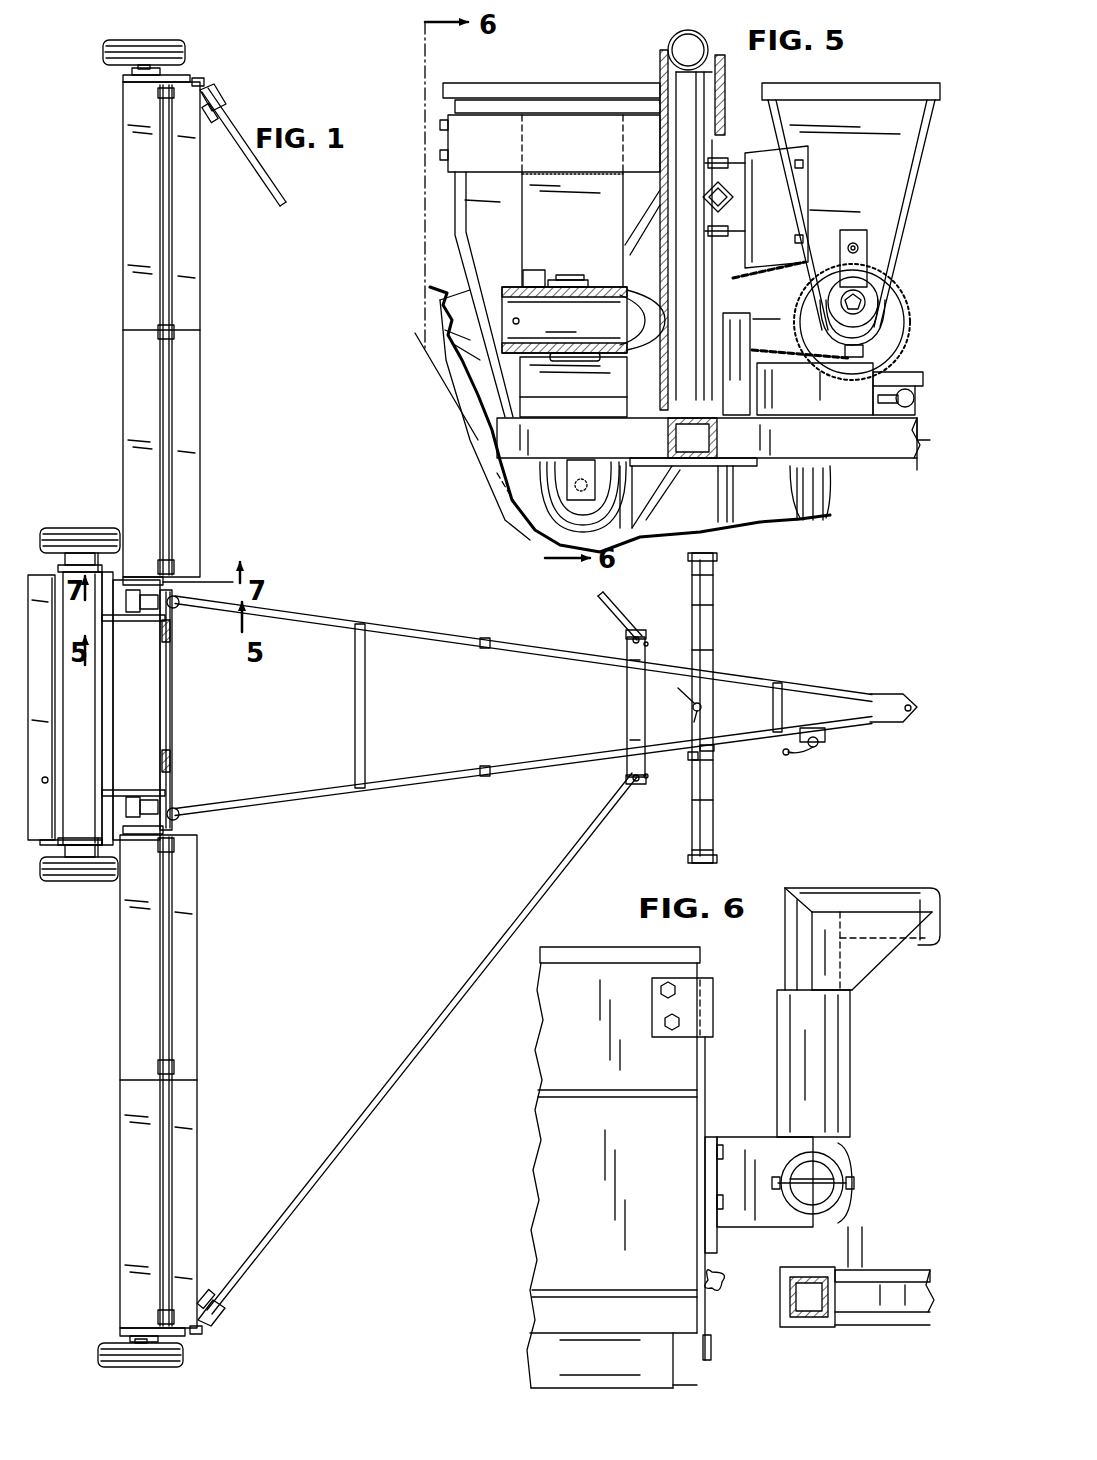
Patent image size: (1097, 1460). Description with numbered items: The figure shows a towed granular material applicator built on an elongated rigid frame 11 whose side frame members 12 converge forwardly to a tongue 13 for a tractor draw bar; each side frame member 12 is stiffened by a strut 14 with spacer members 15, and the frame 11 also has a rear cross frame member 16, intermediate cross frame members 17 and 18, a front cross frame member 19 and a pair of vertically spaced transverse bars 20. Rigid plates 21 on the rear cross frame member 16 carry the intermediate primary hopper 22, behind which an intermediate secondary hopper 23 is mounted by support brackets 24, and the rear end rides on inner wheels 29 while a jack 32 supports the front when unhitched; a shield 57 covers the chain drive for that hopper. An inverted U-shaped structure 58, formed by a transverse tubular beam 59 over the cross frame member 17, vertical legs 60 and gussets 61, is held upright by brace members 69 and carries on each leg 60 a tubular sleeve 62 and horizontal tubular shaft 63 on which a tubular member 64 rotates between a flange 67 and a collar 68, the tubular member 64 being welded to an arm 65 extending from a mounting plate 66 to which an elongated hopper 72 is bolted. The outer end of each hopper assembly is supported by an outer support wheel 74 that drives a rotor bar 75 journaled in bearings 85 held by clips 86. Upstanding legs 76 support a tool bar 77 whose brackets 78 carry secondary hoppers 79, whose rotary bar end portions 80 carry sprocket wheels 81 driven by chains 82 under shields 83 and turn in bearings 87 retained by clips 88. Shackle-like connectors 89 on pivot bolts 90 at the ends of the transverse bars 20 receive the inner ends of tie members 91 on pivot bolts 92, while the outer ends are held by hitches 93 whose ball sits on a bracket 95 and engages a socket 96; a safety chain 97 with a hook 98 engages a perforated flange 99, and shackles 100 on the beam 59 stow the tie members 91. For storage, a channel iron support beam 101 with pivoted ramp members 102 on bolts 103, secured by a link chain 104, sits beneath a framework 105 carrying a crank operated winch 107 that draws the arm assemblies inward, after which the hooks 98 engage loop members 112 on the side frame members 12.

In FIG. 1, the frame 11 is at (433, 625).
In FIG. 1, the side frame members 12 is at (385, 620).
In FIG. 5, the side frame members 12 is at (917, 462).
In FIG. 6, the side frame members 12 is at (806, 1330).
In FIG. 1, the tongue 13 is at (905, 698).
In FIG. 1, the tension members or struts 14 is at (100, 1355).
In FIG. 1, the spacer members 15 is at (486, 650).
In FIG. 1, the rear cross frame member 16 is at (105, 742).
In FIG. 1, the intermediate cross frame member 17 is at (173, 730).
In FIG. 5, the intermediate cross frame member 17 is at (668, 438).
In FIG. 6, the intermediate cross frame member 17 is at (906, 1270).
In FIG. 1, the intermediate cross frame member 18 is at (355, 737).
In FIG. 1, the front cross frame member 19 is at (783, 706).
In FIG. 1, the transverse bars 20 is at (627, 708).
In FIG. 1, the rigid plates 21 is at (106, 550).
In FIG. 1, the intermediate primary hopper 22 is at (75, 721).
In FIG. 1, the intermediate secondary hopper 23 is at (48, 780).
In FIG. 1, the support brackets 24 is at (50, 590).
In FIG. 1, the inner or rear wheels 29 is at (48, 530).
In FIG. 1, the jack 32 is at (818, 748).
In FIG. 1, the shield 57 is at (58, 870).
In FIG. 1, the inverted U-shaped structure 58 is at (173, 709).
In FIG. 5, the inverted U-shaped structure 58 is at (666, 38).
In FIG. 6, the inverted U-shaped structure 58 is at (890, 886).
In FIG. 1, the transverse horizontal tubular beam 59 is at (173, 688).
In FIG. 5, the transverse horizontal tubular beam 59 is at (709, 40).
In FIG. 6, the transverse horizontal tubular beam 59 is at (851, 886).
In FIG. 1, the vertical legs 60 is at (177, 607).
In FIG. 5, the vertical legs 60 is at (706, 112).
In FIG. 6, the vertical legs 60 is at (787, 957).
In FIG. 5, the gussets 61 is at (660, 60).
In FIG. 6, the gussets 61 is at (876, 962).
In FIG. 5, the tubular sleeve 62 is at (658, 228).
In FIG. 6, the tubular sleeve 62 is at (838, 1057).
In FIG. 5, the tubular shafts 63 is at (564, 320).
In FIG. 6, the tubular shafts 63 is at (838, 1170).
In FIG. 1, the tubular members 64 is at (140, 614).
In FIG. 5, the tubular members 64 is at (545, 284).
In FIG. 1, the arms 65 is at (150, 594).
In FIG. 5, the arms 65 is at (577, 282).
In FIG. 6, the arms 65 is at (738, 1146).
In FIG. 1, the mounting plates 66 is at (180, 579).
In FIG. 5, the mounting plates 66 is at (525, 285).
In FIG. 6, the mounting plates 66 is at (708, 1192).
In FIG. 5, the flanges 67 is at (622, 356).
In FIG. 5, the collars 68 is at (525, 363).
In FIG. 6, the collars 68 is at (846, 1205).
In FIG. 1, the brace members 69 is at (150, 632).
In FIG. 1, the elongated hoppers 72 is at (136, 386).
In FIG. 5, the elongated hoppers 72 is at (449, 205).
In FIG. 6, the elongated hoppers 72 is at (567, 1055).
In FIG. 1, the outer support wheels 74 is at (105, 54).
In FIG. 5, the outer support wheels 74 is at (449, 305).
In FIG. 5, the rotor bars 75 is at (520, 520).
In FIG. 6, the rotor bars 75 is at (712, 1350).
In FIG. 5, the upstanding legs 76 is at (730, 250).
In FIG. 5, the tool bars 77 is at (735, 198).
In FIG. 1, the brackets 78 is at (163, 92).
In FIG. 5, the brackets 78 is at (755, 186).
In FIG. 1, the secondary hoppers 79 is at (184, 402).
In FIG. 5, the secondary hoppers 79 is at (881, 86).
In FIG. 5, the end portions of rotary bars 80 is at (890, 340).
In FIG. 5, the sprocket wheels 81 is at (903, 318).
In FIG. 1, the endless link chains 82 is at (201, 82).
In FIG. 5, the endless link chains 82 is at (893, 302).
In FIG. 1, the shields 83 is at (125, 81).
In FIG. 5, the shields 83 is at (790, 310).
In FIG. 5, the bearings 85 is at (568, 503).
In FIG. 5, the brackets or clips 86 is at (580, 460).
In FIG. 6, the brackets or clips 86 is at (718, 1298).
In FIG. 5, the bearings 87 is at (882, 284).
In FIG. 5, the retainer clips 88 is at (864, 232).
In FIG. 1, the shackle-like connectors 89 is at (638, 636).
In FIG. 1, the pivot bolts 90 is at (647, 643).
In FIG. 1, the tie members 91 is at (281, 208).
In FIG. 1, the pivot bolts 92 is at (627, 636).
In FIG. 1, the hitches 93 is at (230, 111).
In FIG. 5, the hitches 93 is at (930, 446).
In FIG. 5, the bracket 95 is at (794, 415).
In FIG. 1, the socket 96 is at (214, 88).
In FIG. 5, the socket 96 is at (897, 376).
In FIG. 5, the safety chain 97 is at (862, 475).
In FIG. 5, the hook 98 is at (900, 410).
In FIG. 5, the perforated flange 99 is at (862, 412).
In FIG. 1, the shackles 100 is at (170, 650).
In FIG. 1, the transverse support beam 101 is at (716, 665).
In FIG. 1, the ramp members 102 is at (713, 598).
In FIG. 1, the bolts 103 is at (717, 558).
In FIG. 1, the link chain 104 is at (713, 628).
In FIG. 1, the rectangular framework 105 is at (714, 748).
In FIG. 1, the crank operated winch 107 is at (694, 752).
In FIG. 1, the loop members 112 is at (692, 706).